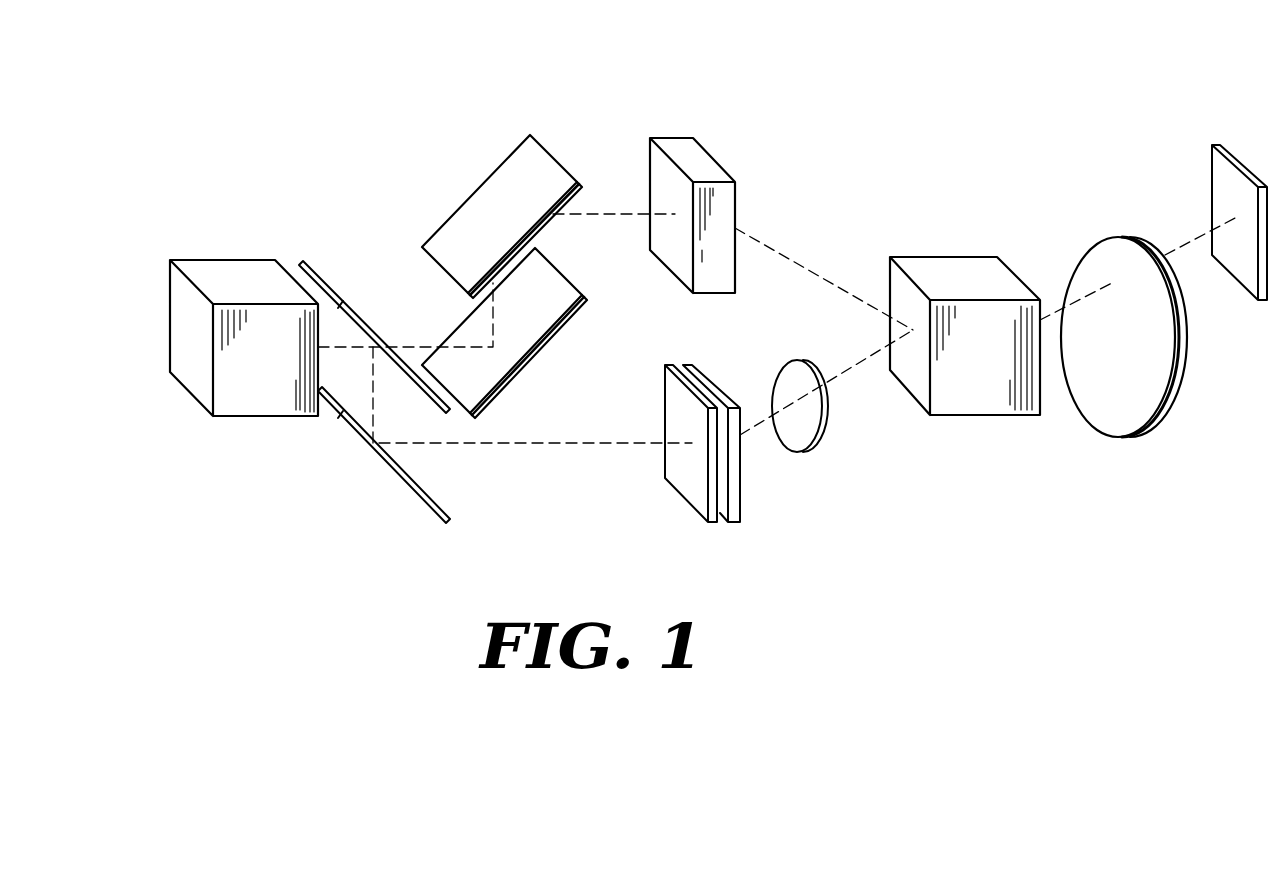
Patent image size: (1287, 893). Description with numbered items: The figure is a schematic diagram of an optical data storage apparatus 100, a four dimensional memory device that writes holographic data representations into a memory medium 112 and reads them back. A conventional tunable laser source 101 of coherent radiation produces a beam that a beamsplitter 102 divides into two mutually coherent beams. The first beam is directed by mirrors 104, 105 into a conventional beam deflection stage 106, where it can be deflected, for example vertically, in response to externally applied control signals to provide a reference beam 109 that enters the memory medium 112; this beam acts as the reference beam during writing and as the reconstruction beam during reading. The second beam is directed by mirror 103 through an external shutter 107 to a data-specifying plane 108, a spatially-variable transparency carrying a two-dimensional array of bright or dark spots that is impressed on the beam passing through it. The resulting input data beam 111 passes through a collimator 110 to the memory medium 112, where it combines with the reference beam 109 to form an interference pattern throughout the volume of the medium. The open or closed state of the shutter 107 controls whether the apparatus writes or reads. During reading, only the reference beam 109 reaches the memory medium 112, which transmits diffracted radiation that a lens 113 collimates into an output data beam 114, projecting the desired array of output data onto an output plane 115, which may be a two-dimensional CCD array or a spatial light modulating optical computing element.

The optical data storage apparatus 100 is at (813, 52).
The tunable laser source 101 is at (277, 410).
The beamsplitter 102 is at (312, 270).
The mirror 103 is at (417, 495).
The mirror 104 is at (517, 365).
The mirror 105 is at (483, 207).
The beam deflection stage 106 is at (692, 152).
The external shutter 107 is at (703, 507).
The data-specifying plane 108 is at (732, 513).
The reference beam 109 is at (757, 238).
The collimator 110 is at (785, 380).
The input data beam 111 is at (852, 372).
The memory medium 112 is at (975, 273).
The lens 113 is at (1150, 408).
The output data beam 114 is at (1183, 245).
The output plane 115 is at (1232, 160).